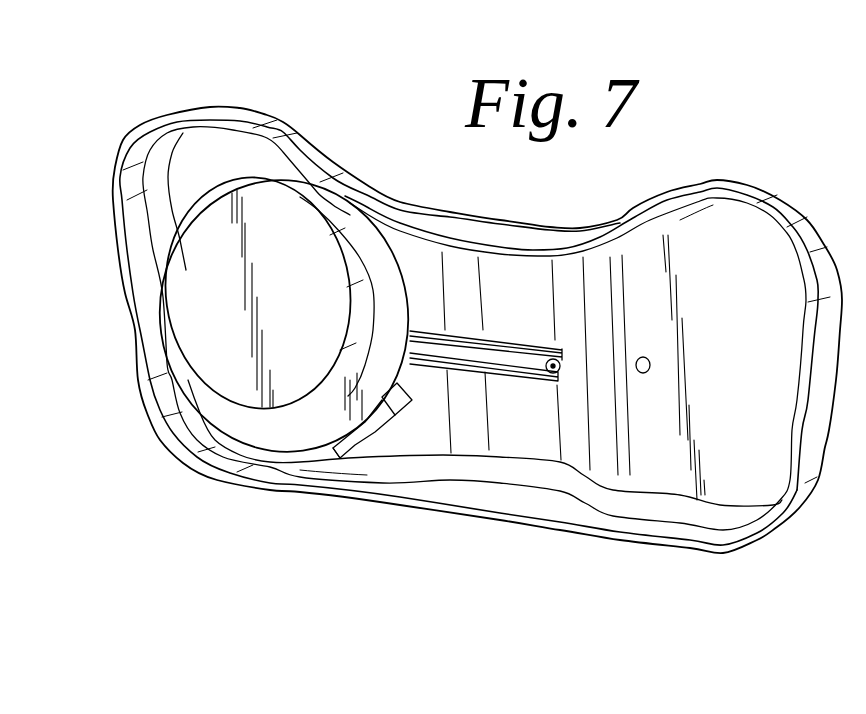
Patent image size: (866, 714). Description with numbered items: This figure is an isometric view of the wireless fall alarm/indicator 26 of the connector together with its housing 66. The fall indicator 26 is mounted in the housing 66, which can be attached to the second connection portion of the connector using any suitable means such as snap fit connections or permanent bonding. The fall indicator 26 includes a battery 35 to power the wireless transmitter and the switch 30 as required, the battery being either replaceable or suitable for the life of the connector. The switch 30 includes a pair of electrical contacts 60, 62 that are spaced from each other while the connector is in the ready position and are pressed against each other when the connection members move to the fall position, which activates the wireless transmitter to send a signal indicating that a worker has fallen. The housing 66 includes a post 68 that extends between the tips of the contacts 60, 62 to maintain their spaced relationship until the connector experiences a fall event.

The wireless fall alarm/indicator 26 is at (409, 311).
The switch 30 is at (415, 366).
The battery 35 is at (190, 292).
The electrical contact 60 is at (525, 347).
The electrical contact 62 is at (525, 376).
The housing 66 is at (745, 185).
The post 68 is at (562, 364).